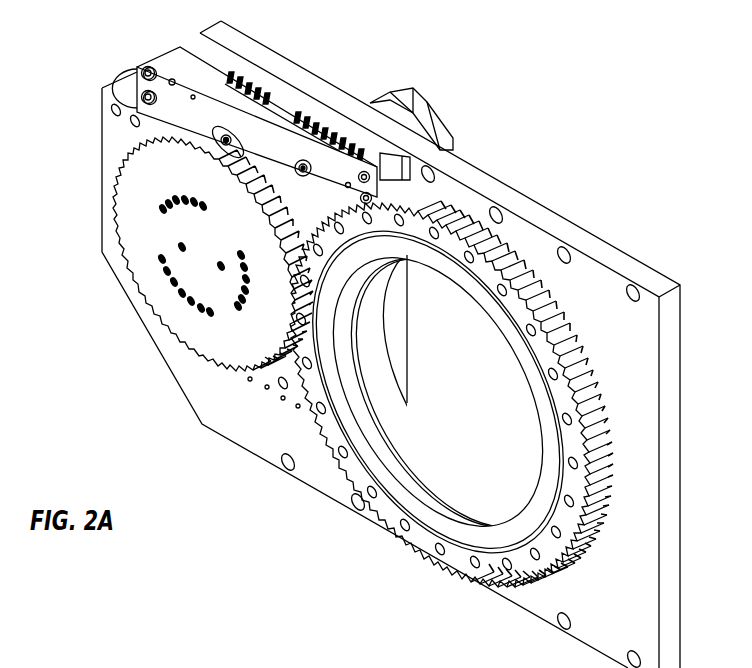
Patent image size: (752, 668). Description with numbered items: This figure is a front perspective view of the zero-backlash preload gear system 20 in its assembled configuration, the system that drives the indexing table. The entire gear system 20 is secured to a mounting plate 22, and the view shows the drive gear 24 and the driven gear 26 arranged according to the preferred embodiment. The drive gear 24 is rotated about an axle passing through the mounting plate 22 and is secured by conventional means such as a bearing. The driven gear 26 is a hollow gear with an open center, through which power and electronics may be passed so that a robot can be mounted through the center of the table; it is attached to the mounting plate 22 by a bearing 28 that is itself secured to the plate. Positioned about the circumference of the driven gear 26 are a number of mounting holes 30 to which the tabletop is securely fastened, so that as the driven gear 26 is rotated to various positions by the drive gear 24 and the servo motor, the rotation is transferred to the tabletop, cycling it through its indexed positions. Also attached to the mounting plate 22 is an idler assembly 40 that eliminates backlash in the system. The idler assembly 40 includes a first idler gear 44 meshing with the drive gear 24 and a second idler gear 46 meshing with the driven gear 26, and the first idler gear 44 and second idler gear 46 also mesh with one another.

The zero-backlash preload gear system 20 is at (553, 88).
The mounting plate 22 is at (519, 200).
The drive gear 24 is at (113, 188).
The driven gear 26 is at (563, 320).
The bearing 28 is at (553, 450).
The mounting holes 30 is at (467, 260).
The idler assembly 40 is at (150, 62).
The first idler gear 44 is at (270, 95).
The second idler gear 46 is at (334, 110).